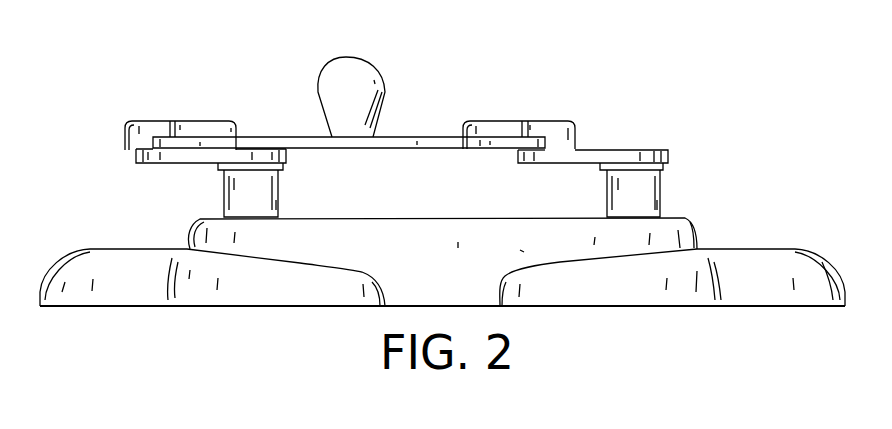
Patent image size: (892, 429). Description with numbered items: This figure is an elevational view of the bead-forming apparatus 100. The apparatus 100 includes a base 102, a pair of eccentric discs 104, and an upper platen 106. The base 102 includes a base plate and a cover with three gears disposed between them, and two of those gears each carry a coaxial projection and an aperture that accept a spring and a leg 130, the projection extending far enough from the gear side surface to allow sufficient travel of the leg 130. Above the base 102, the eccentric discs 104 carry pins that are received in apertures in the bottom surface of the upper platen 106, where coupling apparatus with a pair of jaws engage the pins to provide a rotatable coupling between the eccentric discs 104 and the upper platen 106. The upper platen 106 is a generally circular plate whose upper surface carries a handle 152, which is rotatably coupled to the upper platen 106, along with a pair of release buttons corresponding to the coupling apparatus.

The apparatus 100 is at (112, 76).
The base 102 is at (752, 249).
The eccentric discs 104 is at (647, 150).
The upper platen 106 is at (410, 136).
The leg 130 is at (660, 190).
The handle 152 is at (355, 58).